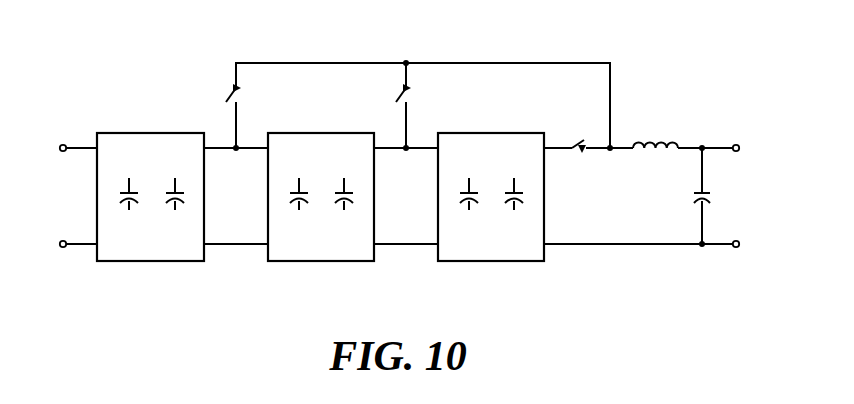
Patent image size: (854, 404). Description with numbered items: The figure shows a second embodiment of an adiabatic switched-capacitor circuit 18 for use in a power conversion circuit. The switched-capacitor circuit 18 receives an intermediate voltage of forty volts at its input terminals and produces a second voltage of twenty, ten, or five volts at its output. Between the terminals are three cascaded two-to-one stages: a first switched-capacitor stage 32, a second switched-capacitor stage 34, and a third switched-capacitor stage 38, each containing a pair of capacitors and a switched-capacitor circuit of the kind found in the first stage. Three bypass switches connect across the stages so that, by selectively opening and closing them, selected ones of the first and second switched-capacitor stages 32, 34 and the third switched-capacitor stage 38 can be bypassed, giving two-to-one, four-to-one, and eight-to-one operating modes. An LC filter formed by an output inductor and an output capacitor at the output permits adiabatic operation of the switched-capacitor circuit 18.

The switched-capacitor circuit 18 is at (690, 71).
The first switched-capacitor stage 32 is at (152, 270).
The second switched-capacitor stage 34 is at (323, 270).
The third switched-capacitor stage 38 is at (492, 270).